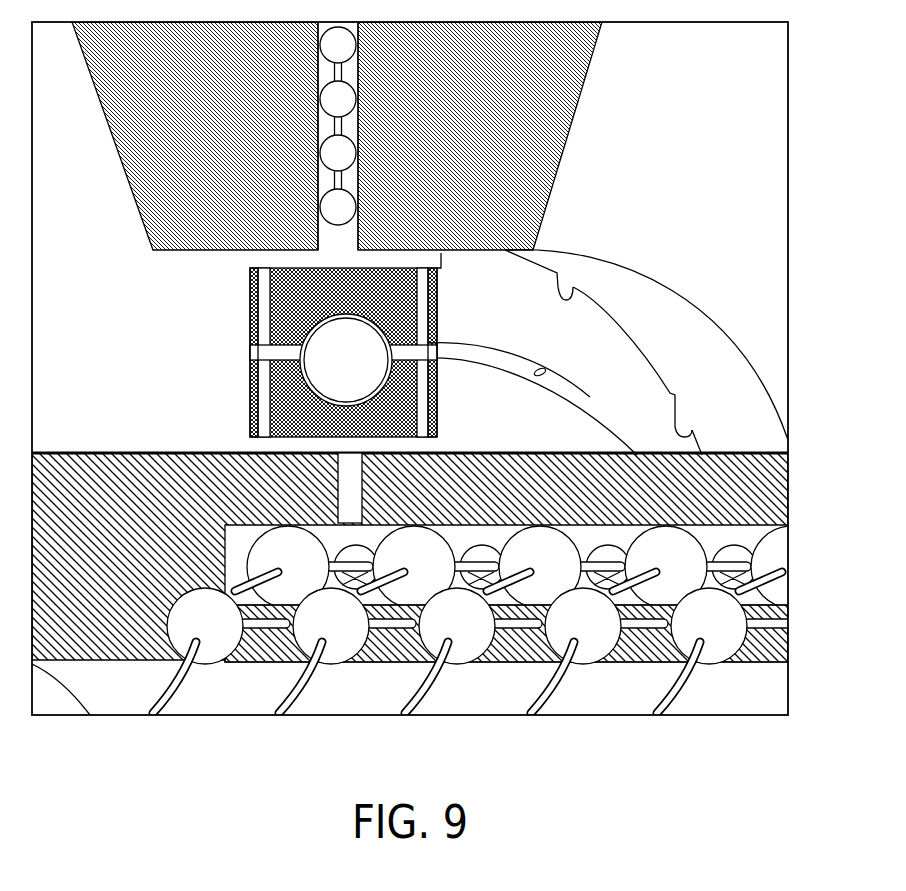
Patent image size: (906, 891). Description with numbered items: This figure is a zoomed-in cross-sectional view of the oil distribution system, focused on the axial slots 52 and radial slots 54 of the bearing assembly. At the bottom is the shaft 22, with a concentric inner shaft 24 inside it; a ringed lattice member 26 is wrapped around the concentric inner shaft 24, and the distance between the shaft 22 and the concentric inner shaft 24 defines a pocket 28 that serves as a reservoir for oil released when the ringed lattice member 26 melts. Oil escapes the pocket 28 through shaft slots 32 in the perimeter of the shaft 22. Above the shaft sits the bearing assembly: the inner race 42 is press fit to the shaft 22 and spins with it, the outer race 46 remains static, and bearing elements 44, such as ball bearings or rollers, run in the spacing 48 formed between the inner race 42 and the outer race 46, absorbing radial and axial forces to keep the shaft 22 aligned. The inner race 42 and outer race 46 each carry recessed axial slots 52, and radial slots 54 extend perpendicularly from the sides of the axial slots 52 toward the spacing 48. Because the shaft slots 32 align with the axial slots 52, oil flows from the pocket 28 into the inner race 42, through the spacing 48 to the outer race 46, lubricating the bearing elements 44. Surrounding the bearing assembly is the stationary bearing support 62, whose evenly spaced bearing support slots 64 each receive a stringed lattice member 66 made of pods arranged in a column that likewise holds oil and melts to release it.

The shaft 22 is at (637, 455).
The concentric inner shaft 24 is at (765, 648).
The ringed lattice member 26 is at (318, 660).
The pocket 28 is at (410, 595).
The shaft slots 32 is at (350, 503).
The inner race 42 is at (588, 423).
The bearing elements 44 is at (357, 348).
The outer race 46 is at (538, 310).
The spacing 48 is at (272, 350).
The axial slots 52 is at (262, 262).
The radial slots 54 is at (267, 307).
The bearing support 62 is at (120, 162).
The bearing support slots 64 is at (330, 183).
The stringed lattice member 66 is at (325, 118).